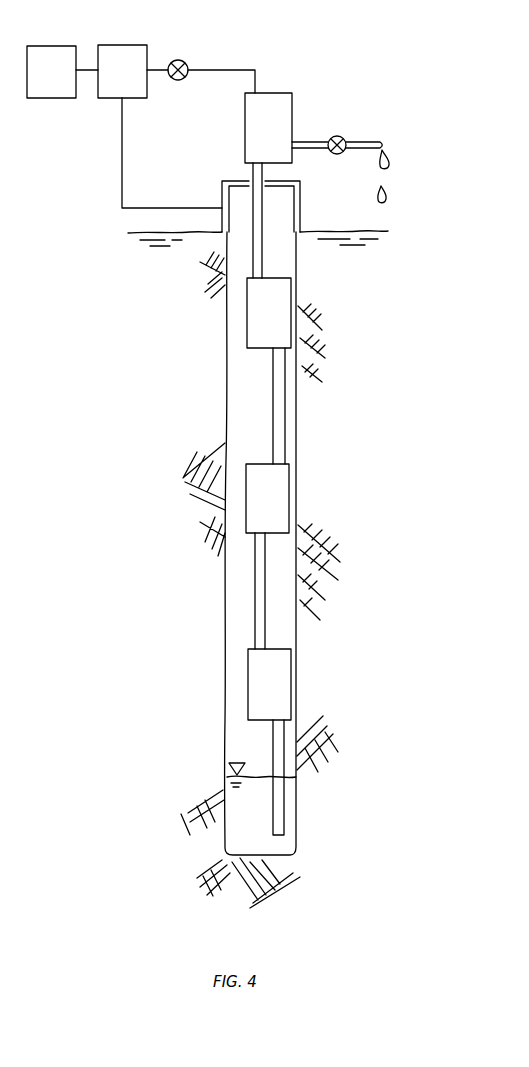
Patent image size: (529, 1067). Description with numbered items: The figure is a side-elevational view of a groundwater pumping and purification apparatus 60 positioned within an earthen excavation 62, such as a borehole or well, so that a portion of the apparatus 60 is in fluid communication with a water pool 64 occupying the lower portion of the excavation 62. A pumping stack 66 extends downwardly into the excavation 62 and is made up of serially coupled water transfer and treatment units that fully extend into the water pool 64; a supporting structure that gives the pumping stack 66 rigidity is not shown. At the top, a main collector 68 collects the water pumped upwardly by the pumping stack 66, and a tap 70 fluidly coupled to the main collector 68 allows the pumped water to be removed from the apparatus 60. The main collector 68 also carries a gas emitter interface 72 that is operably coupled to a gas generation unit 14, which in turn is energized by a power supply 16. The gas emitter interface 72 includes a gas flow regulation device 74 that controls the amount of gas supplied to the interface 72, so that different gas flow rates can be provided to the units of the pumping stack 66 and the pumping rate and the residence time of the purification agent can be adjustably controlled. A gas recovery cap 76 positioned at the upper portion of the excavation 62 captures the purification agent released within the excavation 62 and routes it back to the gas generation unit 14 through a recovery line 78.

The gas generation unit 14 is at (130, 81).
The power supply 16 is at (59, 81).
The groundwater pumping and purification apparatus 60 is at (331, 52).
The earthen excavation 62 is at (227, 388).
The water pool 64 is at (252, 816).
The pumping stack 66 is at (338, 488).
The main collector 68 is at (277, 130).
The tap 70 is at (306, 144).
The gas emitter interface 72 is at (213, 66).
The gas flow regulation device 74 is at (185, 60).
The gas recovery cap 76 is at (302, 200).
The recovery line 78 is at (123, 172).